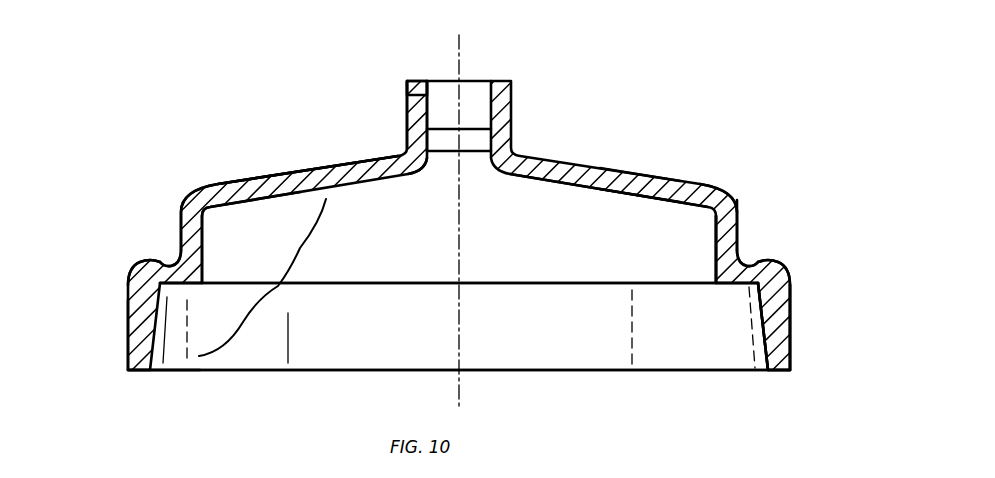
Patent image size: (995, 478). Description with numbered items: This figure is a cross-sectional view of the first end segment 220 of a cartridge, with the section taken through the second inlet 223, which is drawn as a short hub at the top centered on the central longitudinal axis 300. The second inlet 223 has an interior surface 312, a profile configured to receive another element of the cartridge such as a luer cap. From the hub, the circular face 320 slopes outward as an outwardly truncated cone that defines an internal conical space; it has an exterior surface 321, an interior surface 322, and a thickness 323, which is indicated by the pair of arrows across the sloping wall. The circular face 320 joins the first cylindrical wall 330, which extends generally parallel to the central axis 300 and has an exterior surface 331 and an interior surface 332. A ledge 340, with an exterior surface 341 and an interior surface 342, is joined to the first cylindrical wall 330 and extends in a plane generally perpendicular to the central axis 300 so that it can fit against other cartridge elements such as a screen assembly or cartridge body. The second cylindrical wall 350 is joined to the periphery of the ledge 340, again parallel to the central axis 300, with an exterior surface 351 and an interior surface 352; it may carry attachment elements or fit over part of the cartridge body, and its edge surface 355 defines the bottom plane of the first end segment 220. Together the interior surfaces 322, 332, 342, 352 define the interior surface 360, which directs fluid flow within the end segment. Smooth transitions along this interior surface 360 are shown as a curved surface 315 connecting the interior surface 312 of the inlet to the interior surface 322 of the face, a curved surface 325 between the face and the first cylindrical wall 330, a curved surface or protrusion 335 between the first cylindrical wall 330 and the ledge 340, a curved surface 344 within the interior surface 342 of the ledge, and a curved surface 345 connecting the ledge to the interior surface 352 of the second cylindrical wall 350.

The first end segment 220 is at (650, 22).
The central longitudinal axis 300 is at (461, 328).
The interior surface of the second inlet 312 is at (407, 88).
The second inlet 223 is at (407, 124).
The exterior surface of the circular face 321 is at (332, 166).
The circular face 320 is at (268, 186).
The curved surface 315 is at (427, 170).
The curved surface 325 is at (207, 214).
The curved surface or protrusion 335 is at (198, 270).
The curved surface 344 is at (144, 258).
The curved surface 345 is at (153, 275).
The interior surface 360 is at (262, 277).
The edge surface 355 is at (141, 374).
The interior surface of the circular face 322 is at (577, 187).
The thickness 323 is at (633, 206).
The exterior surface of the first cylindrical wall 331 is at (741, 200).
The first cylindrical wall 330 is at (738, 222).
The ledge 340 is at (760, 263).
The exterior surface of the ledge 341 is at (790, 276).
The interior surface of the first cylindrical wall 332 is at (714, 255).
The interior surface of the ledge 342 is at (738, 288).
The exterior surface of the second cylindrical wall 351 is at (791, 308).
The interior surface of the second cylindrical wall 352 is at (762, 332).
The second cylindrical wall 350 is at (777, 340).